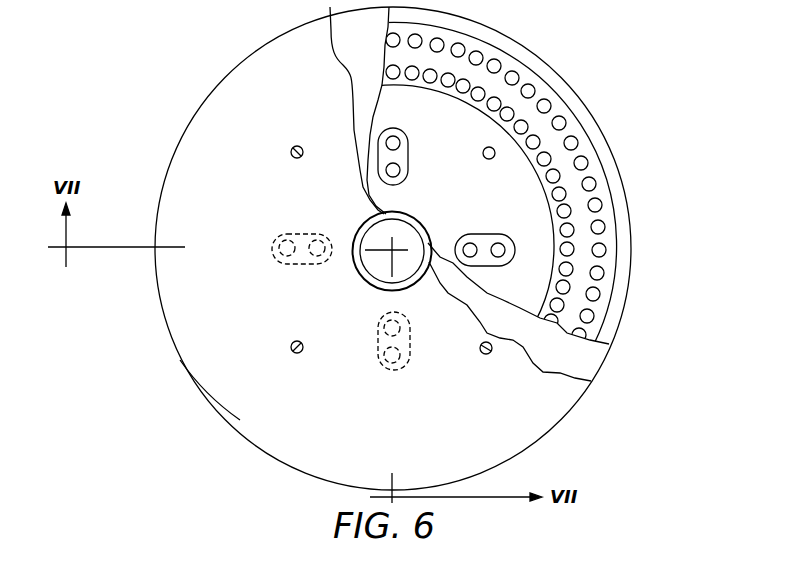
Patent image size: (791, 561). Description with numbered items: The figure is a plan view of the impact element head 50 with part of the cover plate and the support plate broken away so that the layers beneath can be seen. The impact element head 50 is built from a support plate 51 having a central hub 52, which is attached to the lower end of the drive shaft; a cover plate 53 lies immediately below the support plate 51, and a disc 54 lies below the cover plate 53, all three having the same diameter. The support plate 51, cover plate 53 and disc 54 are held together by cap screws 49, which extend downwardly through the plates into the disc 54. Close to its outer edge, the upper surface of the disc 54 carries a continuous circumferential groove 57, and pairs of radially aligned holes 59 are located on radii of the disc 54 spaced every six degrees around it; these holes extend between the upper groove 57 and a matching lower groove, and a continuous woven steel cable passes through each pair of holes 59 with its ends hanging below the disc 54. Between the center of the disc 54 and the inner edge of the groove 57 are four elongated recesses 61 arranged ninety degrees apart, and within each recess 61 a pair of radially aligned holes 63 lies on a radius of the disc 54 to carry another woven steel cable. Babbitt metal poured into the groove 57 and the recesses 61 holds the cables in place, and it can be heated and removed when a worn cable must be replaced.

The cap screws 49 is at (298, 145).
The impact element head 50 is at (172, 363).
The support plate 51 is at (233, 410).
The hub 52 is at (365, 279).
The cover plate 53 is at (590, 362).
The disc 54 is at (522, 191).
The circumferential groove 57 is at (594, 297).
The radially aligned holes 59 is at (496, 197).
The elongated recesses 61 is at (400, 153).
The radially aligned holes 63 is at (400, 167).